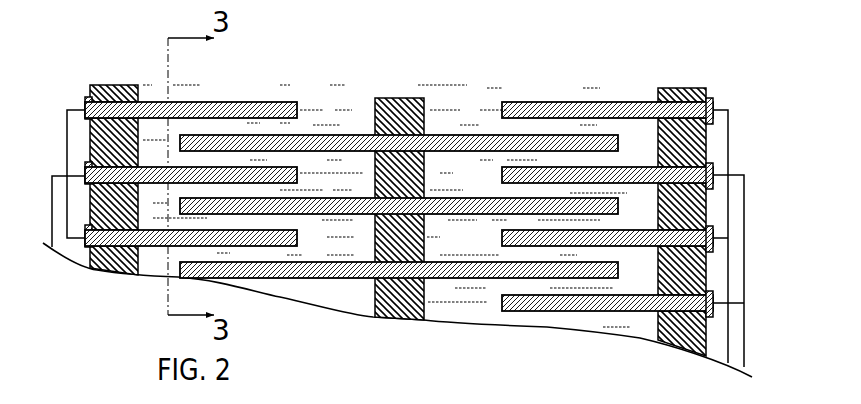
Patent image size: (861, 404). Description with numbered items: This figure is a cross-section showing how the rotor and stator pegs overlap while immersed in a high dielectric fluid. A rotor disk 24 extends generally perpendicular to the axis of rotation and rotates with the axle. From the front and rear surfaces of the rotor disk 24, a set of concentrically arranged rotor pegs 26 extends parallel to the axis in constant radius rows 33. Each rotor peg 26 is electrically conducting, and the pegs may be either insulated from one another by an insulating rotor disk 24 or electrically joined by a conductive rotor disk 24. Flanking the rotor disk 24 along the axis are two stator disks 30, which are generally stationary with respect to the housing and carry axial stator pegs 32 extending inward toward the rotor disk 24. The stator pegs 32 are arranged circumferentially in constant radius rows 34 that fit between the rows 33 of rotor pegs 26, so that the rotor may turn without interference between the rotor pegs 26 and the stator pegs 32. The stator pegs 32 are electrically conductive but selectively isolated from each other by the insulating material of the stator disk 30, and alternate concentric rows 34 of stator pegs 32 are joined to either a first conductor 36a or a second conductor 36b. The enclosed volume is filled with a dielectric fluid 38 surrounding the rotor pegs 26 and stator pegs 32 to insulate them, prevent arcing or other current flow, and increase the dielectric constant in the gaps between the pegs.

The rotor disk 24 is at (400, 98).
The rotor pegs 26 is at (310, 135).
The stator disks 30 is at (118, 85).
The stator pegs 32 is at (218, 102).
The rows of rotor pegs 33 is at (30, 220).
The rows of stator pegs 34 is at (752, 252).
The first conductor 36a is at (728, 210).
The second conductor 36b is at (744, 278).
The dielectric fluid 38 is at (357, 103).